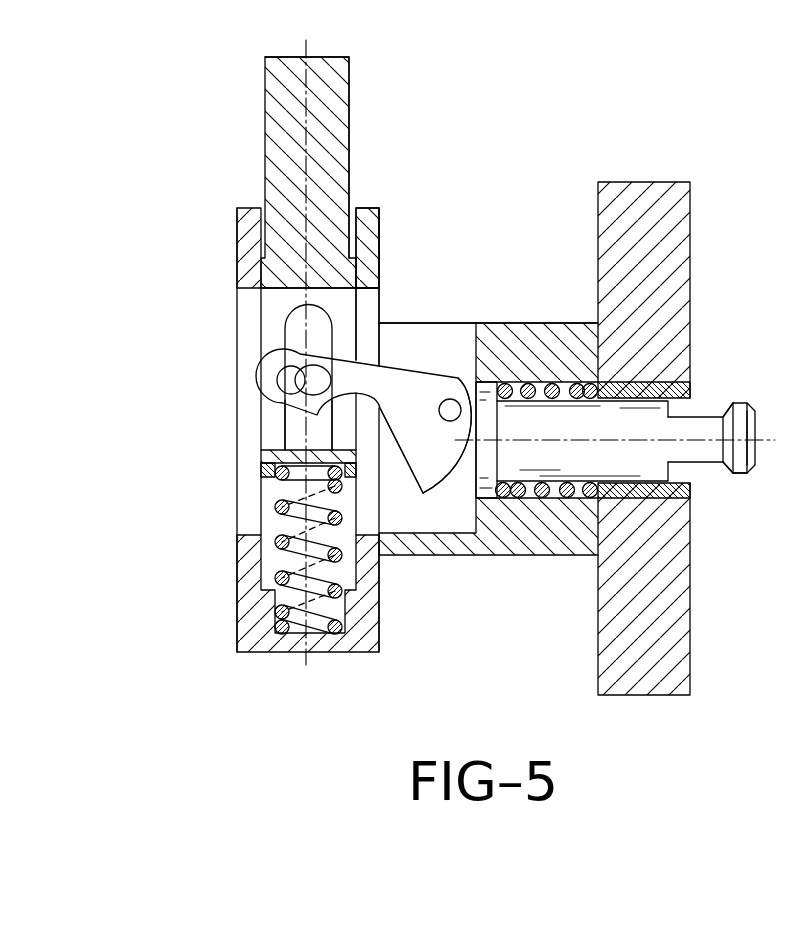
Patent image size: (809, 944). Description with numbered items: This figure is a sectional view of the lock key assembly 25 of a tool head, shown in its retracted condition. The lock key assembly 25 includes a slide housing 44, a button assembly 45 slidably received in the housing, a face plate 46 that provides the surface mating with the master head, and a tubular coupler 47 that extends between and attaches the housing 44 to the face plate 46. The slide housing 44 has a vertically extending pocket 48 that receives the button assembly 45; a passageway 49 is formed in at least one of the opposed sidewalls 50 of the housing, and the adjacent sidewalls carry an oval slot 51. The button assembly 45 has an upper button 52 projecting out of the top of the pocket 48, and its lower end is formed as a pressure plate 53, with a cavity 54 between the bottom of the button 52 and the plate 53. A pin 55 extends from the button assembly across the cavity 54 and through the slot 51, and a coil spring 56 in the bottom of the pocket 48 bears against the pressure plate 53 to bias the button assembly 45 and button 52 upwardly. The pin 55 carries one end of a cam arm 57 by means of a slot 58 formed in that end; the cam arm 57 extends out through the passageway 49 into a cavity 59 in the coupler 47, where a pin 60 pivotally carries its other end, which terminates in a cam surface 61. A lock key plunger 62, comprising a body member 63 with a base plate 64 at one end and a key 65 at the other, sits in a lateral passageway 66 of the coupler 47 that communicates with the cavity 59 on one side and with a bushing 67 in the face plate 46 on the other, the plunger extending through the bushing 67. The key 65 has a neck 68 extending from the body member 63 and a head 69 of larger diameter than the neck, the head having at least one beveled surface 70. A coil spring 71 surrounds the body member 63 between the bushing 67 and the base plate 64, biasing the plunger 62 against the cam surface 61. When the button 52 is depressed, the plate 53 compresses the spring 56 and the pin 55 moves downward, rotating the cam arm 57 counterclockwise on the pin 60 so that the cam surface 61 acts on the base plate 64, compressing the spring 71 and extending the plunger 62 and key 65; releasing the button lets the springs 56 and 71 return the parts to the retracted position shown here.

The lock key assembly 25 is at (495, 193).
The slide housing 44 is at (383, 216).
The button assembly 45 is at (352, 90).
The face plate 46 is at (650, 180).
The tubular coupler 47 is at (498, 558).
The pocket 48 is at (262, 232).
The passageway 49 is at (366, 290).
The sidewalls 50 is at (240, 268).
The oval slot 51 is at (285, 427).
The upper button 52 is at (280, 86).
The pressure plate 53 is at (263, 470).
The cavity 54 is at (272, 333).
The pin 55 is at (300, 396).
The coil spring 56 is at (290, 547).
The cam arm 57 is at (436, 370).
The slot 58 is at (282, 375).
The cavity 59 is at (417, 517).
The pin 60 is at (452, 407).
The cam surface 61 is at (447, 492).
The lock key plunger 62 is at (755, 400).
The body member 63 is at (612, 471).
The base plate 64 is at (490, 428).
The key 65 is at (740, 476).
The lateral passageway 66 is at (562, 497).
The bushing 67 is at (612, 383).
The neck 68 is at (706, 462).
The head 69 is at (743, 447).
The beveled surface 70 is at (725, 415).
The coil spring 71 is at (565, 380).